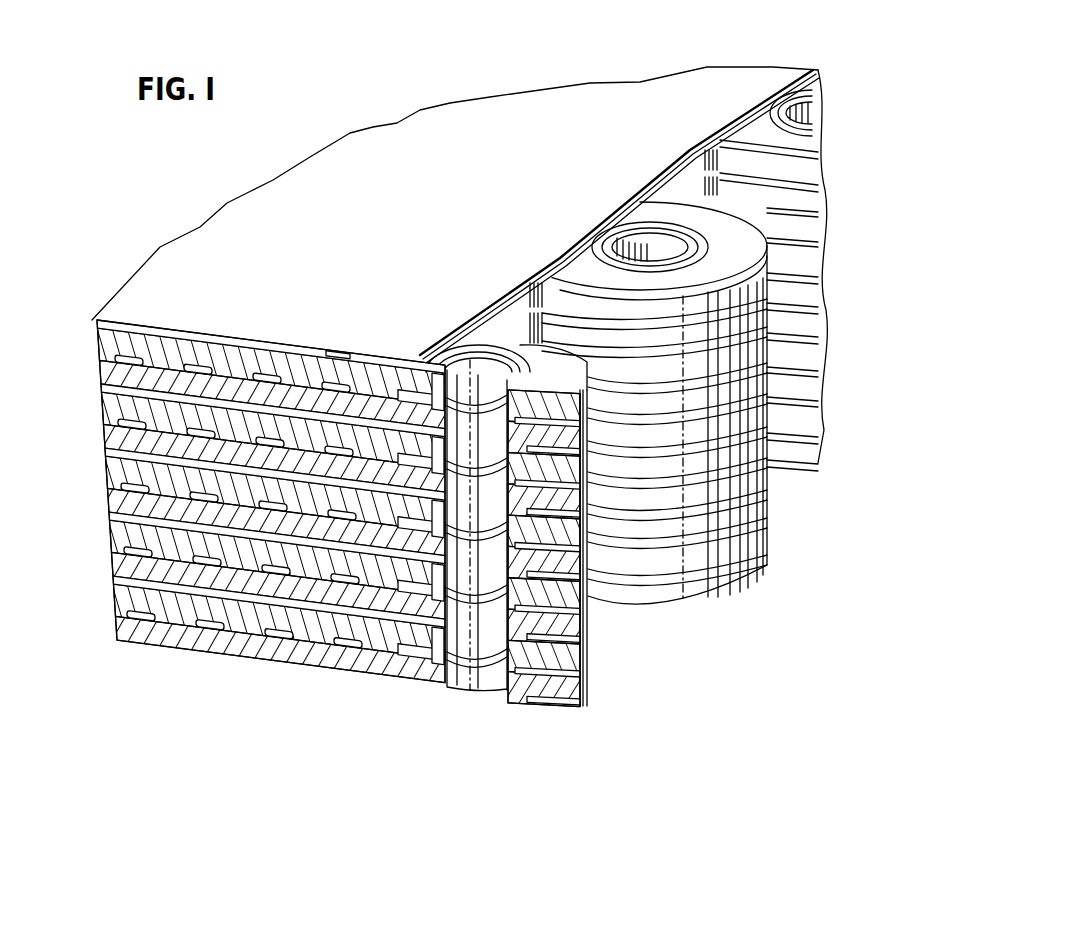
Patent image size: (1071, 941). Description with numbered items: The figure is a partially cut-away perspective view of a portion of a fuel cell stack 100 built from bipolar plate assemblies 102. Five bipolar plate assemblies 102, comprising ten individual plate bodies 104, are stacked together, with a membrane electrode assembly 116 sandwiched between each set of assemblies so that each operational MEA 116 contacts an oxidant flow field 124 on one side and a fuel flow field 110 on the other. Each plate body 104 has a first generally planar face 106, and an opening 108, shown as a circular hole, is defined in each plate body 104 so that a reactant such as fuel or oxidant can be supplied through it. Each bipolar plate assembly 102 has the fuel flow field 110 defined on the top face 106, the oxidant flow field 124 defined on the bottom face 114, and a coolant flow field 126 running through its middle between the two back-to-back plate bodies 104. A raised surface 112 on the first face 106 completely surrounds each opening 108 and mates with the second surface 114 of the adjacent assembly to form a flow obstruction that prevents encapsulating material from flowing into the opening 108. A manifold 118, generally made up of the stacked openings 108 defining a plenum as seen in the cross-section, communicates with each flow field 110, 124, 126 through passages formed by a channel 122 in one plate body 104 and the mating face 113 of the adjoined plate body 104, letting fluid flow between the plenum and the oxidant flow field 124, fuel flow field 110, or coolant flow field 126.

The fuel cell stack 100 is at (730, 683).
The bipolar plate assembly 102 is at (593, 704).
The plate body 104 is at (108, 586).
The first generally planar face 106 is at (160, 328).
The opening 108 is at (612, 236).
The fuel flow field 110 is at (273, 352).
The raised surface 112 is at (467, 357).
The mating face 113 is at (337, 365).
The second surface 114 is at (423, 352).
The membrane electrode assembly 116 is at (96, 320).
The manifold 118 is at (577, 752).
The channel 122 is at (486, 362).
The oxidant flow field 124 is at (307, 360).
The coolant flow field 126 is at (208, 342).